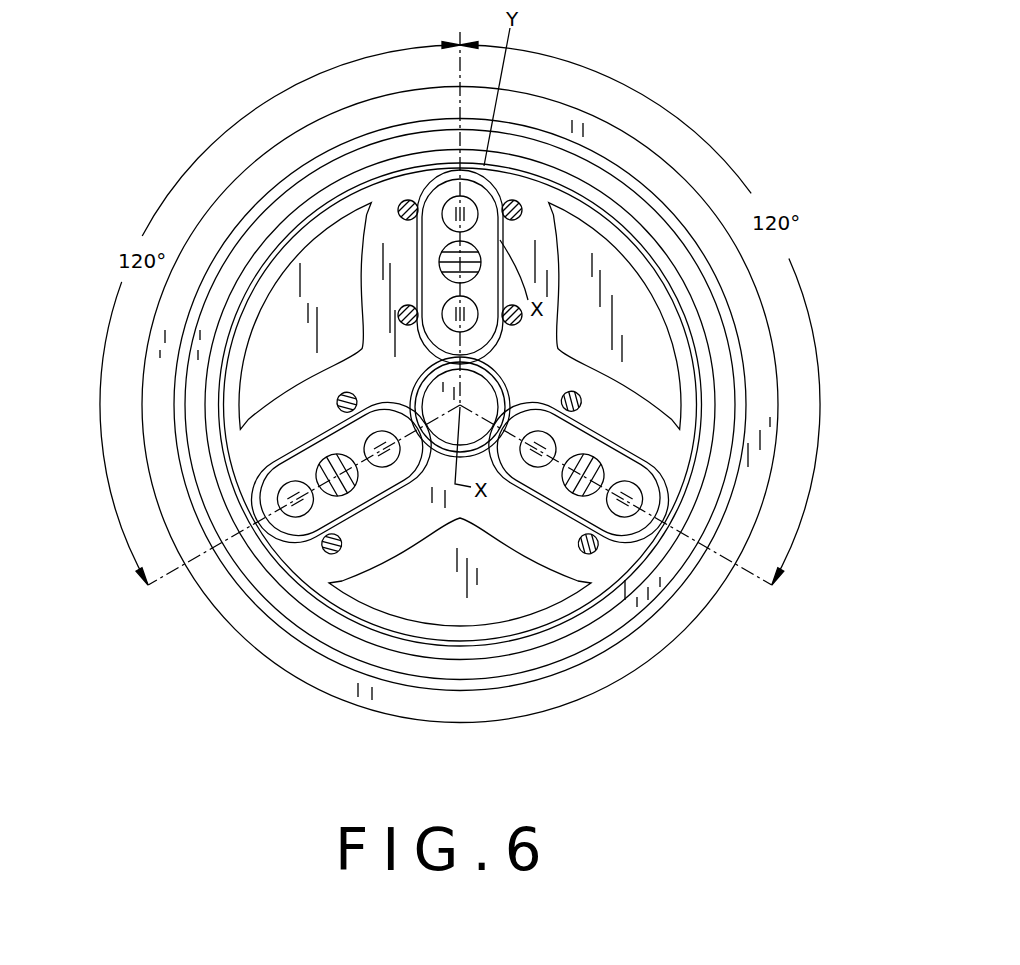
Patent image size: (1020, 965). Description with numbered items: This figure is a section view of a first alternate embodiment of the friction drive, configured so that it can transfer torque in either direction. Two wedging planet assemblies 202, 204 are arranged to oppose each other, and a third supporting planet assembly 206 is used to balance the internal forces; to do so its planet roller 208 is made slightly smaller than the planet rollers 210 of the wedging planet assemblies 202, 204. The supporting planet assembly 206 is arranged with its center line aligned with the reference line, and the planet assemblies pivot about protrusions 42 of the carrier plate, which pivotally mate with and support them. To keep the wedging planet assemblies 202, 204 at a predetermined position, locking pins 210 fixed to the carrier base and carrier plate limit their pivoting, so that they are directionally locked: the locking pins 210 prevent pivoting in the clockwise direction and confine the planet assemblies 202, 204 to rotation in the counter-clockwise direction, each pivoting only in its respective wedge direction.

The protrusions 42 is at (402, 204).
The wedging planet assembly 202 is at (655, 459).
The wedging planet assembly 204 is at (263, 466).
The supporting planet assembly 206 is at (506, 176).
The planet roller 208 is at (462, 62).
The locking pins 210 is at (400, 312).